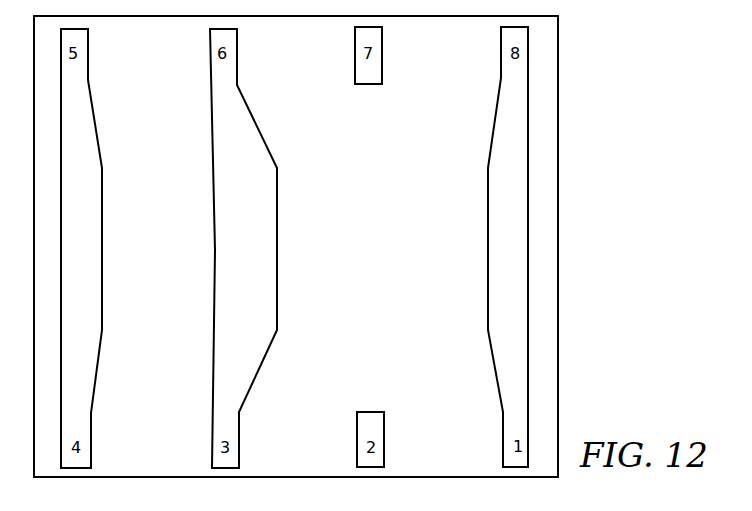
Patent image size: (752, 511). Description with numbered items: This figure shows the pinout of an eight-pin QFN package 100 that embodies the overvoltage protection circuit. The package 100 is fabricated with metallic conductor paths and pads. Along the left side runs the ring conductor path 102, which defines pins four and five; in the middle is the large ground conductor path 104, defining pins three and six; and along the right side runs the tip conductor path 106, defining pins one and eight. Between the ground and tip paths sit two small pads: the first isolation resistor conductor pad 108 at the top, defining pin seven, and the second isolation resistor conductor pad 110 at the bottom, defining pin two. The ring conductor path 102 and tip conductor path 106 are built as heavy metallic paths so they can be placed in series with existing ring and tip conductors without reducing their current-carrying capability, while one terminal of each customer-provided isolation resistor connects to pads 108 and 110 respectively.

The package 100 is at (559, 147).
The ring conductor path 102 is at (103, 194).
The ground conductor path 104 is at (215, 252).
The tip conductor path 106 is at (488, 203).
The first isolation resistor conductor pad 108 is at (383, 55).
The second isolation resistor conductor pad 110 is at (385, 438).